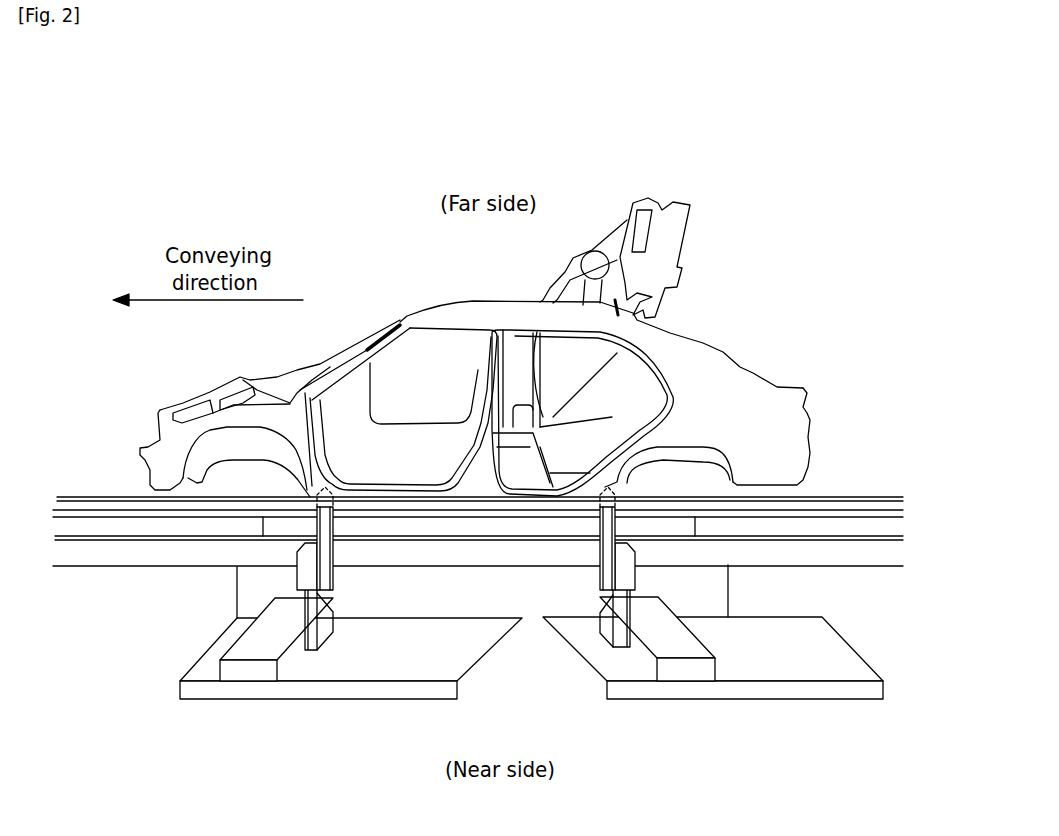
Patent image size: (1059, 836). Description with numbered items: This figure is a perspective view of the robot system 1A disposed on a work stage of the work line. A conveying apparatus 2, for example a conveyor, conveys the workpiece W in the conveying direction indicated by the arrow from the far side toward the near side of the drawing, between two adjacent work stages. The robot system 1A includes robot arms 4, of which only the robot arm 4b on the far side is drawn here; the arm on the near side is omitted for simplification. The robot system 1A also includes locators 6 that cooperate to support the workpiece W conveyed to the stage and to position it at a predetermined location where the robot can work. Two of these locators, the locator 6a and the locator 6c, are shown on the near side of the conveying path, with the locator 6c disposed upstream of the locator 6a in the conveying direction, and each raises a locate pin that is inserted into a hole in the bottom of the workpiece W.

The robot system 1A is at (797, 160).
The conveying apparatus 2 is at (105, 567).
The robot arm 4 is at (645, 240).
The robot arm 4b is at (690, 197).
The locator 6 is at (232, 715).
The locator 6a is at (322, 593).
The locator 6c is at (727, 593).
The workpiece W is at (750, 368).